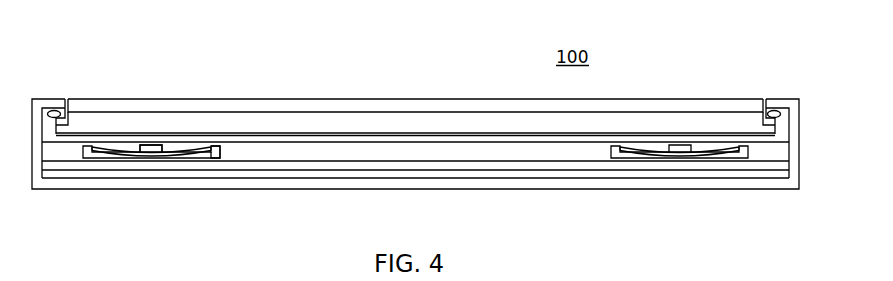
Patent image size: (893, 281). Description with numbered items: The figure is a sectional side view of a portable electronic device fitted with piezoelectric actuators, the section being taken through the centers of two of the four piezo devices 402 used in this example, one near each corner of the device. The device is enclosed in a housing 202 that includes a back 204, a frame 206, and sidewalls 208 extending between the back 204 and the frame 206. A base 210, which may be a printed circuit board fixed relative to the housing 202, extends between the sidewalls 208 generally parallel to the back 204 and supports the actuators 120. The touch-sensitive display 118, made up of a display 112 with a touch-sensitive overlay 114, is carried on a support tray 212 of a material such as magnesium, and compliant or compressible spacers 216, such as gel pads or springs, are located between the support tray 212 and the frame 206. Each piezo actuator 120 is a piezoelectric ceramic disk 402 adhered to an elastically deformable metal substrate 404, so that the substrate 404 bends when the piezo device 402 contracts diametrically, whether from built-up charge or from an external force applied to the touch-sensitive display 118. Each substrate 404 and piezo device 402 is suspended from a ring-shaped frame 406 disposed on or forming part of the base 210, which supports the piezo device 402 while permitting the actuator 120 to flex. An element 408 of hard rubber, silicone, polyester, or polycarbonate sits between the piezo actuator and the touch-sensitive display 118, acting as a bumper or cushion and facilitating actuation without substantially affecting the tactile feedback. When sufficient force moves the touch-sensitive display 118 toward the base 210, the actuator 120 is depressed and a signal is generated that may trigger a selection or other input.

The display 112 is at (363, 115).
The touch-sensitive overlay 114 is at (460, 103).
The touch-sensitive display 118 is at (298, 99).
The actuator 120 is at (153, 145).
The housing 202 is at (586, 188).
The back 204 is at (518, 180).
The frame 206 is at (71, 77).
The sidewalls 208 is at (792, 172).
The base 210 is at (436, 164).
The support tray 212 is at (377, 140).
The compliant spacers 216 is at (773, 108).
The piezo device 402 is at (153, 158).
The substrate 404 is at (93, 152).
The ring-shaped frame 406 is at (216, 152).
The element 408 is at (150, 143).